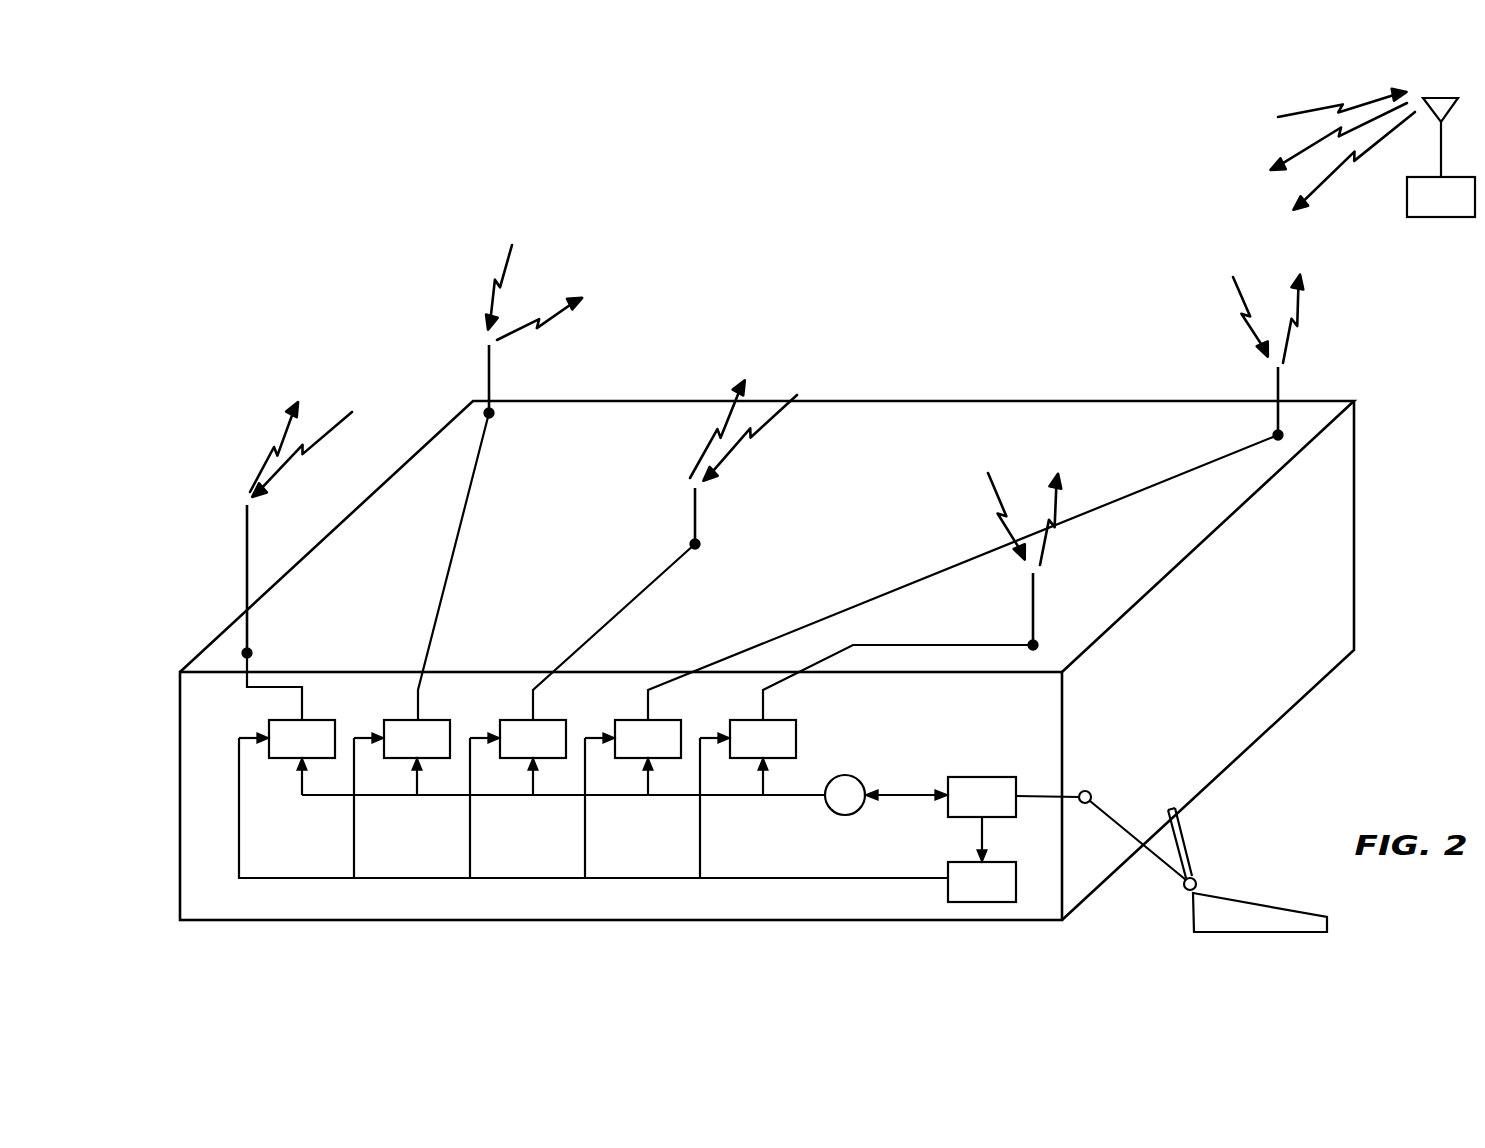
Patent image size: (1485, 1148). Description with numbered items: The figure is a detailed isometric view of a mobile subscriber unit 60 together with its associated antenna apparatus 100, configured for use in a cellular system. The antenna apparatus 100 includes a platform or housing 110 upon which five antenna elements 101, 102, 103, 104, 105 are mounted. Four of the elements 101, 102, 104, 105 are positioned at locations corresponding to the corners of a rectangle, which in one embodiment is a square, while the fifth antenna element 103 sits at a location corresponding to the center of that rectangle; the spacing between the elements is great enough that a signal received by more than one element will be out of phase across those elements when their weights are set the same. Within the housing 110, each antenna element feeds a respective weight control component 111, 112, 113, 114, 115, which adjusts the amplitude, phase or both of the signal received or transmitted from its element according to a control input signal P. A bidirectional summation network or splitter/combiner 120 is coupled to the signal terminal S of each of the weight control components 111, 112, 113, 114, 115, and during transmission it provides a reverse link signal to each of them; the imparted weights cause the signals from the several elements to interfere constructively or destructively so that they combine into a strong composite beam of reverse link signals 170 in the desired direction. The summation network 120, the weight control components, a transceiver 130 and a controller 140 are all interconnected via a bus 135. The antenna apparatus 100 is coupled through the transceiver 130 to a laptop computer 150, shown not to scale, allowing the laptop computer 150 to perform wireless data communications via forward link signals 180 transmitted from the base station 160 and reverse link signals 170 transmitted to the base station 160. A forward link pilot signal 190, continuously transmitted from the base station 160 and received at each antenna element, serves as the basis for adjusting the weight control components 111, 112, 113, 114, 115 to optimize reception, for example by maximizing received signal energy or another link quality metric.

The mobile subscriber unit 60 is at (1354, 513).
The antenna apparatus 100 is at (374, 358).
The antenna element 101 is at (493, 372).
The antenna element 102 is at (1282, 380).
The antenna element 103 is at (698, 512).
The antenna element 104 is at (247, 568).
The antenna element 105 is at (1037, 598).
The housing 110 is at (775, 922).
The weight control component 111 is at (287, 743).
The weight control component 112 is at (402, 743).
The weight control component 113 is at (518, 743).
The weight control component 114 is at (633, 743).
The weight control component 115 is at (748, 743).
The summation network 120 is at (861, 782).
The transceiver 130 is at (1013, 819).
The bus 135 is at (725, 800).
The controller 140 is at (982, 882).
The laptop computer 150 is at (1203, 862).
The base station 160 is at (1441, 157).
The reverse link signals 170 is at (826, 326).
The forward link signals 180 is at (833, 335).
The forward link pilot signal 190 is at (1293, 148).